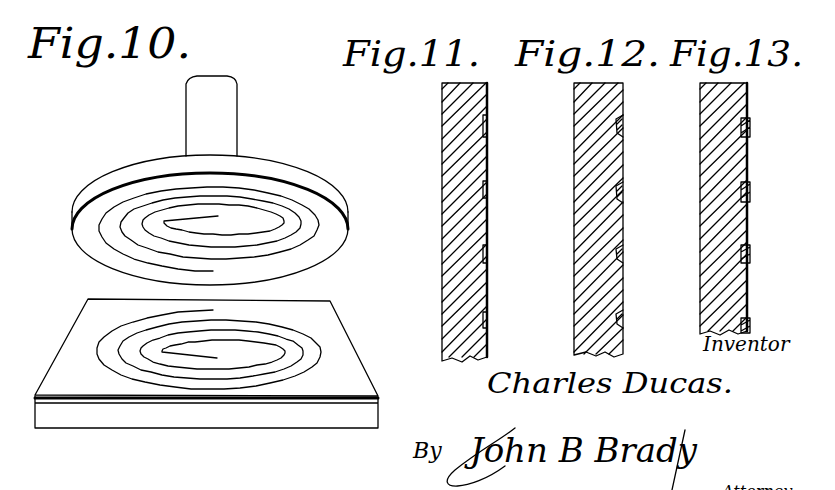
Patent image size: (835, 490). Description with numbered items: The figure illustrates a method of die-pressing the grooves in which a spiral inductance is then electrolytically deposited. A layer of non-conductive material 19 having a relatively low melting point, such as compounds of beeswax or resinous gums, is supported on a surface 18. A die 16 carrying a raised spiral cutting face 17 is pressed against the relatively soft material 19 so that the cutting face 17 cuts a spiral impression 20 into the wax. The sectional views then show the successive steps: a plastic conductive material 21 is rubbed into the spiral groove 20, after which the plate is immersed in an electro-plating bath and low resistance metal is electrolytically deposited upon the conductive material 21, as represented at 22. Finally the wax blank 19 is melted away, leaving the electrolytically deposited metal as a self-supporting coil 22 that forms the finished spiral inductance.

In FIG. 10, the die 16 is at (263, 168).
In FIG. 10, the raised spiral cutting face 17 is at (125, 238).
In FIG. 10, the surface 18 is at (247, 418).
In FIG. 10, the layer of non-conductive material 19 is at (335, 353).
In FIG. 11, the layer of non-conductive material 19 is at (452, 123).
In FIG. 12, the layer of non-conductive material 19 is at (587, 167).
In FIG. 13, the layer of non-conductive material 19 is at (702, 172).
In FIG. 10, the spiral impression 20 is at (280, 328).
In FIG. 11, the spiral impression 20 is at (488, 122).
In FIG. 12, the plastic conductive material 21 is at (625, 127).
In FIG. 13, the plastic conductive material 21 is at (767, 140).
In FIG. 13, the self-supporting coil 22 is at (750, 186).